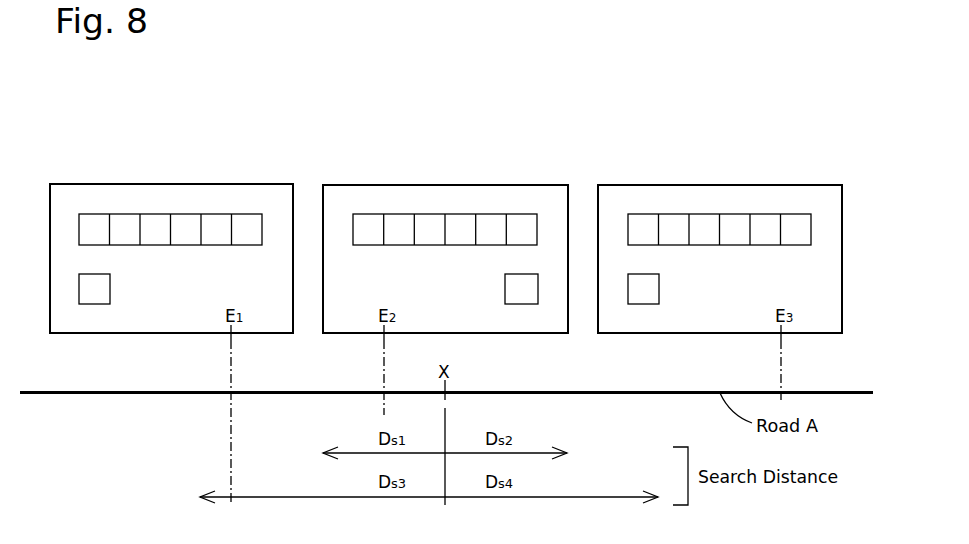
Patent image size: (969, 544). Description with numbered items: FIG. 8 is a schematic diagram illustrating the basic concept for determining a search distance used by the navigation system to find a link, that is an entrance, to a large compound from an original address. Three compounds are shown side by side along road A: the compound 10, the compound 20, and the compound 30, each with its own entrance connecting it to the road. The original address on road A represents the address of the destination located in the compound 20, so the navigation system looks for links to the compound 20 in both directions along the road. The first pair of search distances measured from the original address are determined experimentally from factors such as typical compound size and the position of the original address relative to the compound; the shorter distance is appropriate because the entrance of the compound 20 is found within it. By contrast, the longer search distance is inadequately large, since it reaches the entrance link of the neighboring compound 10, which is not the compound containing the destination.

The compound 10 is at (110, 193).
The compound 20 is at (384, 193).
The compound 30 is at (658, 193).